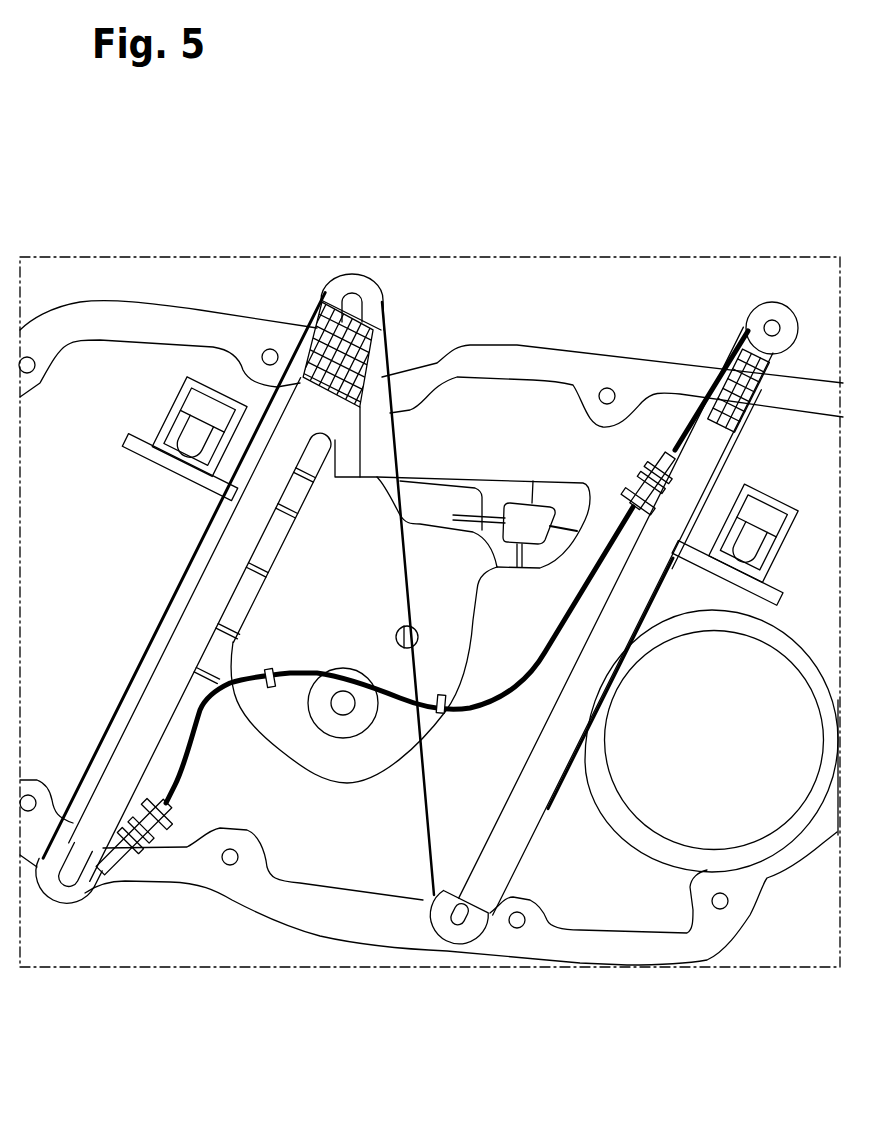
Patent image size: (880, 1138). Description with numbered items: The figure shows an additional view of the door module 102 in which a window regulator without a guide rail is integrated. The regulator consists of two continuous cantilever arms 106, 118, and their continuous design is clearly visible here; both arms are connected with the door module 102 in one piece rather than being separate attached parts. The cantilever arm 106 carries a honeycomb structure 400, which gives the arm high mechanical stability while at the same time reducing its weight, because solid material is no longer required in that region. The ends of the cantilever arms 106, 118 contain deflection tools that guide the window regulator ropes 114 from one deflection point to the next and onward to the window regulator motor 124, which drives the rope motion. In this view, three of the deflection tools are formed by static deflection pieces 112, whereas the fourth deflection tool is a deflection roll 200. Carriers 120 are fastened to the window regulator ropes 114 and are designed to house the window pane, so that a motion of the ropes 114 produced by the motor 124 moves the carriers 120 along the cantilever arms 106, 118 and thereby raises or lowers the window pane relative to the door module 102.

The door module 102 is at (533, 390).
The cantilever arm 106 is at (383, 300).
The deflection pieces 112 is at (333, 291).
The window regulator ropes 114 is at (390, 450).
The cantilever arm 118 is at (93, 847).
The carriers 120 is at (200, 418).
The window regulator motor 124 is at (323, 728).
The deflection roll 200 is at (757, 320).
The honeycomb structure 400 is at (723, 390).